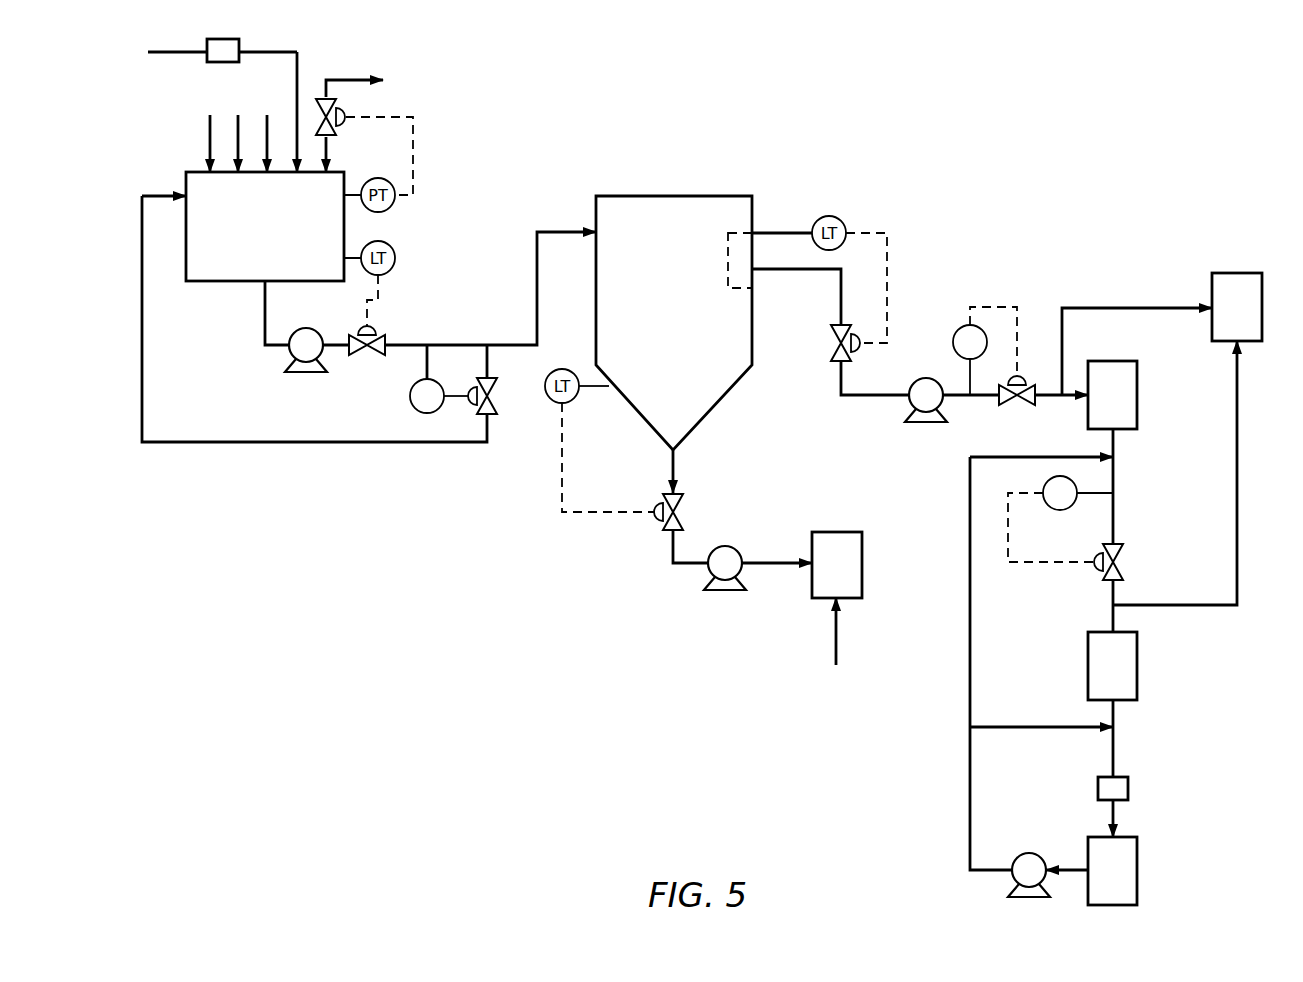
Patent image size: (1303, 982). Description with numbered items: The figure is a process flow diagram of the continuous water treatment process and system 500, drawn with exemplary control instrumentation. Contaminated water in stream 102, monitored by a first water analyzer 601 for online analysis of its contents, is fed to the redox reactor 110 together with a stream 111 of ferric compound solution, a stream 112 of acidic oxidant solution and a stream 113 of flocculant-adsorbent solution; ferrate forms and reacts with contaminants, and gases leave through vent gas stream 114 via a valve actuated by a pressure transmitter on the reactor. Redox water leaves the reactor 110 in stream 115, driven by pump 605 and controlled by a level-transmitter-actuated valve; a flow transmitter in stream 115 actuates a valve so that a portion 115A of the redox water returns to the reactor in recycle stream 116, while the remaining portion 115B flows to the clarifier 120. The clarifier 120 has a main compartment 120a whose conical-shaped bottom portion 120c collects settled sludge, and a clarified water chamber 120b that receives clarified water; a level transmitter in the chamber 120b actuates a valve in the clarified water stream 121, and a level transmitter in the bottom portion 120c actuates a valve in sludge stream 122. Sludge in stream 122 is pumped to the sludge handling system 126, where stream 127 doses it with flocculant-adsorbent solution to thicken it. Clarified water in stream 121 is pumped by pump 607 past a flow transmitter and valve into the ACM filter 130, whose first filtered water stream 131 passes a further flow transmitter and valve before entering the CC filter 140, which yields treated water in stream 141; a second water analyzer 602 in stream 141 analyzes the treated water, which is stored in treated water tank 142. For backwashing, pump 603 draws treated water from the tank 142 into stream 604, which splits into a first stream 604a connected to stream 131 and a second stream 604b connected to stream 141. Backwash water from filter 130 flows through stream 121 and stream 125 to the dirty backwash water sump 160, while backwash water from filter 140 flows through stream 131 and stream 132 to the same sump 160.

The continuous water treatment process and system 500 is at (1090, 93).
The redox reactor 110 is at (265, 226).
The first water analyzer 601 is at (216, 39).
The contaminated water stream 102 is at (297, 78).
The ferric compound solution stream 111 is at (209, 124).
The acidic oxidant solution stream 112 is at (237, 123).
The flocculant-adsorbent solution stream 113 is at (266, 136).
The vent gas stream 114 is at (345, 80).
The redox water stream 115 is at (264, 308).
The recycled portion of redox water 115A is at (298, 442).
The remaining portion of redox water 115B is at (537, 286).
The recycle stream 116 is at (142, 352).
The pump 605 is at (296, 366).
The clarifier 120 is at (674, 323).
The main compartment 120a is at (675, 233).
The clarified water chamber 120b is at (730, 258).
The conical-shaped bottom portion 120c is at (716, 410).
The sludge stream 122 is at (675, 466).
The sludge handling system 126 is at (837, 565).
The flocculant-adsorbent solution stream 127 is at (838, 642).
The clarified water stream 121 is at (880, 395).
The pump 607 is at (916, 381).
The backwash return stream 125 is at (1130, 308).
The dirty backwash water sump 160 is at (1237, 307).
The ACM filter 130 is at (1112, 395).
The first filtered water stream 131 is at (1115, 518).
The backwash return stream 132 is at (1180, 605).
The first backwash stream 604a is at (970, 578).
The CC filter 140 is at (1112, 666).
The second backwash stream 604b is at (1060, 727).
The treated water stream 141 is at (1115, 745).
The second water analyzer 602 is at (1128, 785).
The backwash stream 604 is at (970, 800).
The pump 603 is at (1010, 878).
The treated water tank 142 is at (1112, 871).